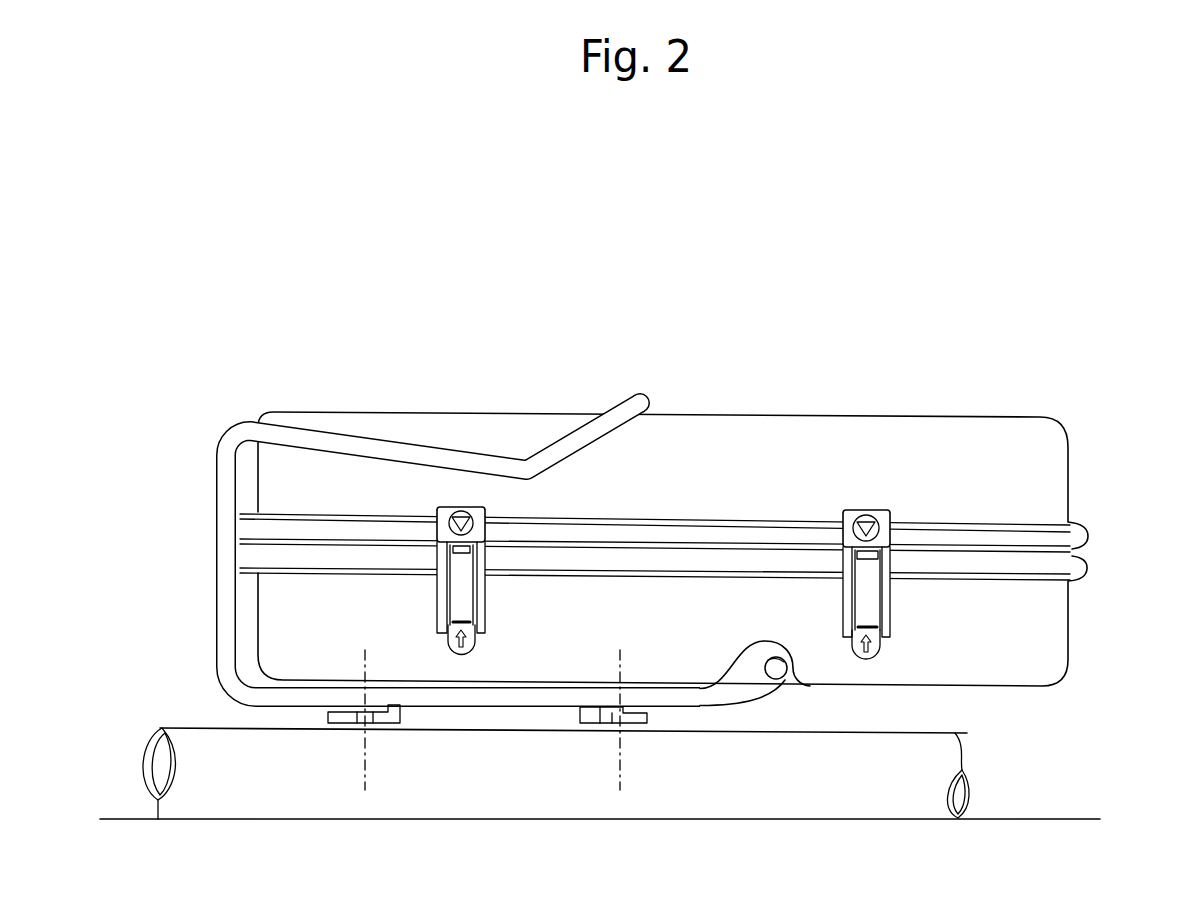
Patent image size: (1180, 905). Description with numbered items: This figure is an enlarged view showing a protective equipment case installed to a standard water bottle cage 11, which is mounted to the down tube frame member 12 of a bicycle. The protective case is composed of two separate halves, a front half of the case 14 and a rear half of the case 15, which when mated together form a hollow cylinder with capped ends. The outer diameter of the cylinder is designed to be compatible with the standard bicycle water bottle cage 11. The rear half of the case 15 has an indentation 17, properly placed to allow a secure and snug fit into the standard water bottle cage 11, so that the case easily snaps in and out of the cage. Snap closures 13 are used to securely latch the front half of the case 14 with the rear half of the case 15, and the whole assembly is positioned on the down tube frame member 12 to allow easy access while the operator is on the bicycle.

The standard water bottle cage 11 is at (623, 397).
The down tube frame member 12 is at (960, 768).
The snap closures 13 is at (851, 503).
The front half of the case 14 is at (1020, 416).
The rear half of the case 15 is at (1068, 617).
The indentation 17 is at (725, 655).